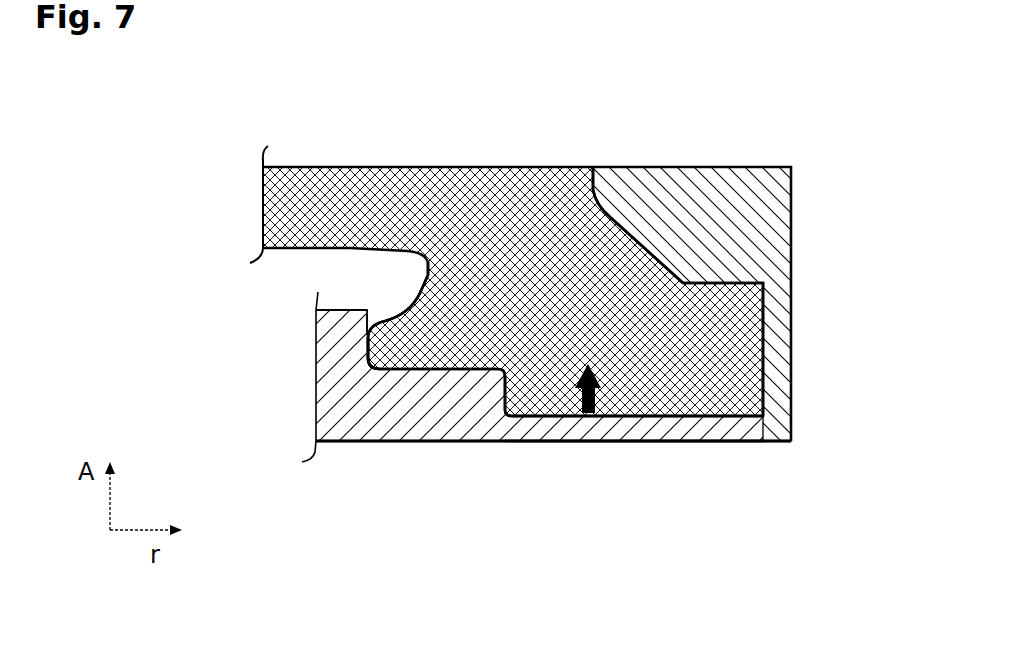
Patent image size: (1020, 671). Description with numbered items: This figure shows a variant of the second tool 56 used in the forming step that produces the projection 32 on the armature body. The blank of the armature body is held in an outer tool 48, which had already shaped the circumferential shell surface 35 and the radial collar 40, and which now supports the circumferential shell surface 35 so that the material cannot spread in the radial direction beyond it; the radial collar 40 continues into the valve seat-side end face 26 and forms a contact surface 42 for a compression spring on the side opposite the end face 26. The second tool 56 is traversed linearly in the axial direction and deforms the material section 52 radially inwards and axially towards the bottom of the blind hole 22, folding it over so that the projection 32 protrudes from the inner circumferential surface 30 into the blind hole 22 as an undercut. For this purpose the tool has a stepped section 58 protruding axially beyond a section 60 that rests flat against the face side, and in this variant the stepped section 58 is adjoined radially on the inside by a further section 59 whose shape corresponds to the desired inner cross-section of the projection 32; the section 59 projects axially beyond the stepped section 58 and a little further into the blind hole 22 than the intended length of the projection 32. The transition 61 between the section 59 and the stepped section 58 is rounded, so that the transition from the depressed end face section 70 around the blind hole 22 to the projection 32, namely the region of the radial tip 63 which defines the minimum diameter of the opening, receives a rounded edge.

The blind hole 22 is at (276, 325).
The valve seat-side end face 26 is at (717, 425).
The inner circumferential surface 30 is at (427, 276).
The projection 32 is at (418, 373).
The circumferential shell surface 35 is at (607, 216).
The radial collar 40 is at (732, 356).
The contact surface 42 is at (717, 283).
The outer tool 48 is at (776, 206).
The material section 52 is at (418, 373).
The second tool 56 is at (627, 442).
The stepped section 58 is at (449, 388).
The further section 59 is at (327, 332).
The section resting flat against the face side 60 is at (563, 424).
The transition 61 is at (358, 366).
The radial tip 63 is at (358, 366).
The end face section 70 is at (479, 371).